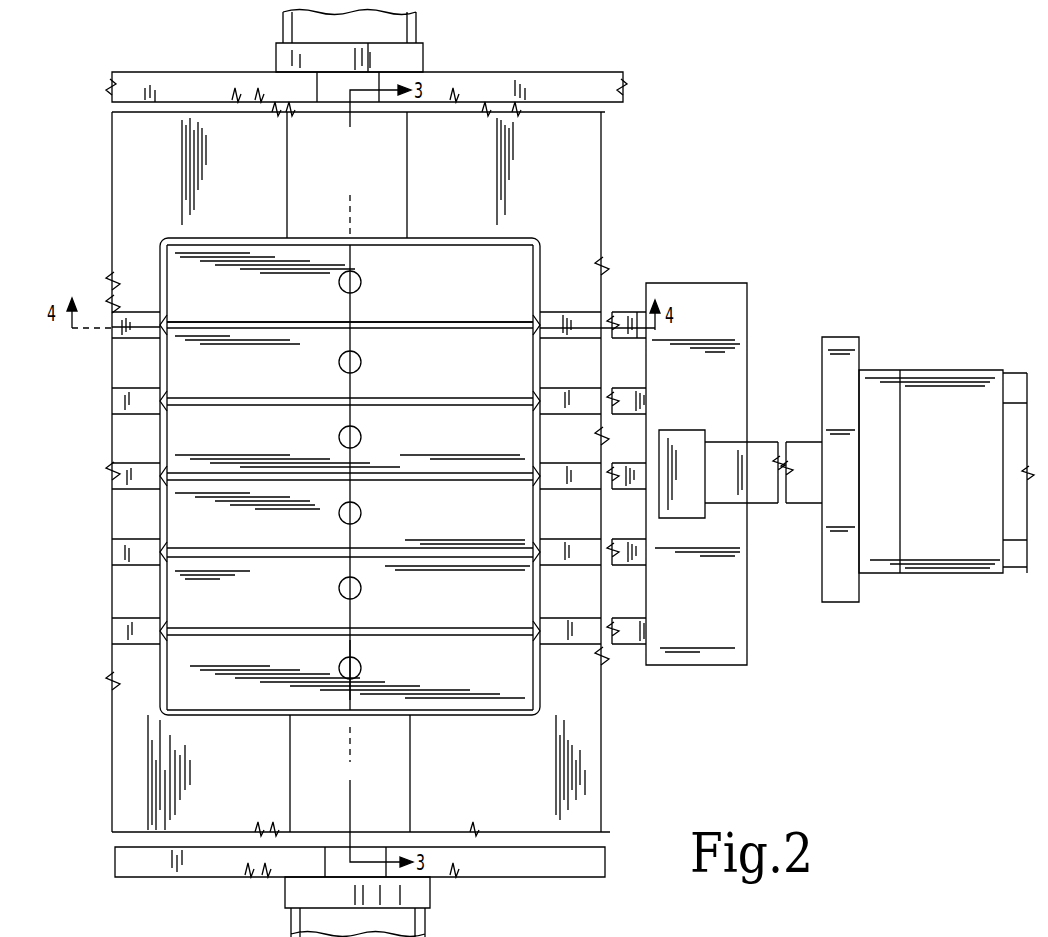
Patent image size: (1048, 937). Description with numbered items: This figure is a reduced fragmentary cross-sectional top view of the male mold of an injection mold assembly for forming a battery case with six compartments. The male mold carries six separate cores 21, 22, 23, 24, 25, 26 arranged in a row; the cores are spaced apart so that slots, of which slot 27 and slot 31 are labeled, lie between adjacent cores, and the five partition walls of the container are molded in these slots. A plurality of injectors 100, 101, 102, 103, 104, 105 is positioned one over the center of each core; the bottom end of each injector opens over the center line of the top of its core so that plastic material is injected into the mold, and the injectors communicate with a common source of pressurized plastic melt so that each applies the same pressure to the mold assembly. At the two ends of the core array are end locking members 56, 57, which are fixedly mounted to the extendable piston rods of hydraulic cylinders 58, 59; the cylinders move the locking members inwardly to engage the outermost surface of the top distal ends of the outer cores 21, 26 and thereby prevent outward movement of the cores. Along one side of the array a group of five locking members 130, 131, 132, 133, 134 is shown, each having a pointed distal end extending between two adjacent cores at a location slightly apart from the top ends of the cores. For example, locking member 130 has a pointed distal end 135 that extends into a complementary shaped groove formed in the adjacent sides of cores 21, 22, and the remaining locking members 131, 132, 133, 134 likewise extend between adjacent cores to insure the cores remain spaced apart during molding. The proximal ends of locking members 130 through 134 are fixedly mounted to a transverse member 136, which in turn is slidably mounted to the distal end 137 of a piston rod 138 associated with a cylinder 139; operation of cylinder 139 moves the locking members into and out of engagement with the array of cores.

The core 21 is at (458, 286).
The core 22 is at (458, 376).
The core 23 is at (458, 448).
The core 24 is at (458, 524).
The core 25 is at (458, 604).
The core 26 is at (458, 681).
The slot 27 is at (405, 321).
The slot 31 is at (356, 665).
The end locking member 56 is at (389, 166).
The end locking member 57 is at (389, 790).
The hydraulic cylinder 58 is at (416, 30).
The hydraulic cylinder 59 is at (430, 898).
The injector 100 is at (340, 287).
The injector 101 is at (340, 367).
The injector 102 is at (340, 442).
The injector 103 is at (340, 518).
The injector 104 is at (340, 593).
The injector 105 is at (340, 673).
The locking member 130 is at (626, 311).
The locking member 131 is at (633, 387).
The locking member 132 is at (634, 462).
The locking member 133 is at (633, 538).
The locking member 134 is at (635, 617).
The pointed distal end 135 is at (533, 320).
The transverse member 136 is at (740, 297).
The distal end of piston rod 137 is at (698, 432).
The piston rod 138 is at (765, 447).
The cylinder 139 is at (928, 373).